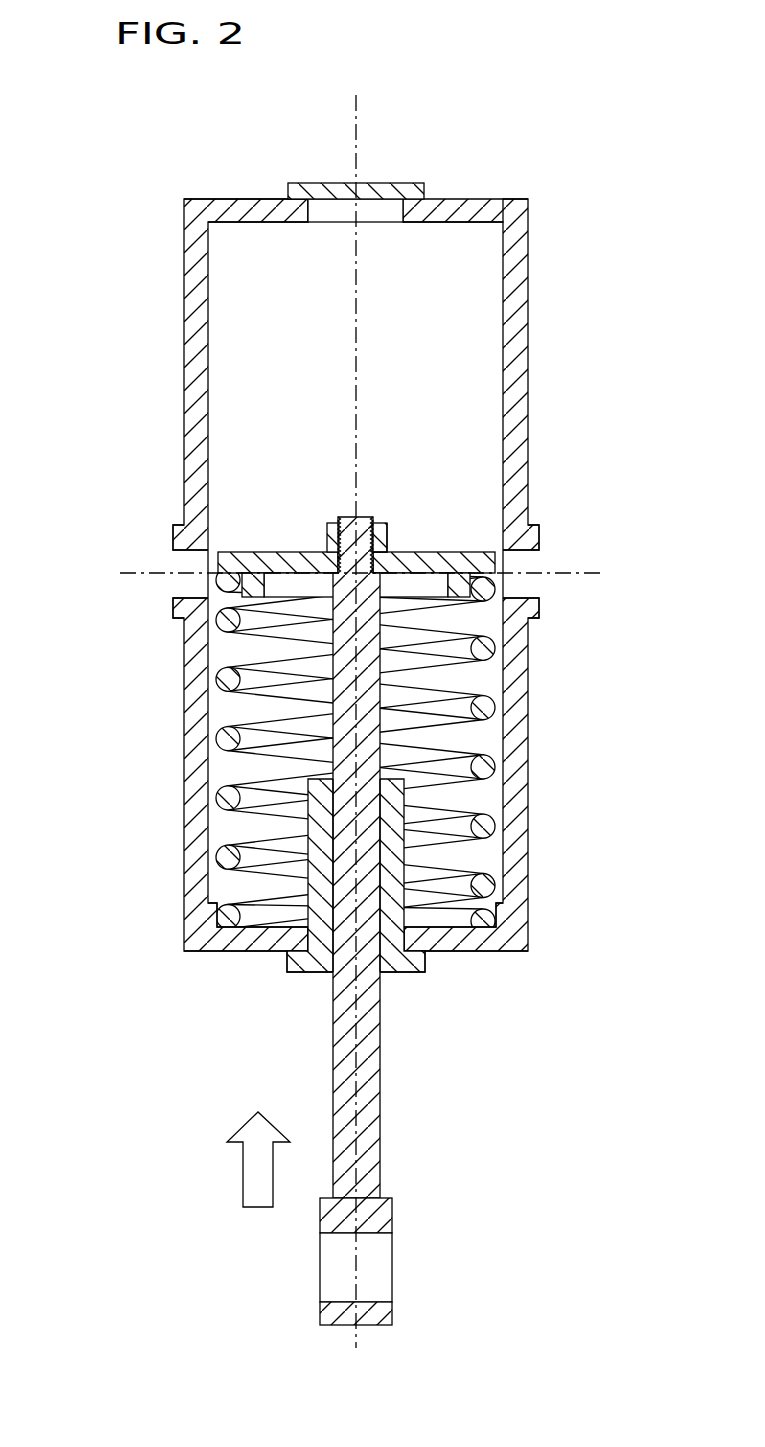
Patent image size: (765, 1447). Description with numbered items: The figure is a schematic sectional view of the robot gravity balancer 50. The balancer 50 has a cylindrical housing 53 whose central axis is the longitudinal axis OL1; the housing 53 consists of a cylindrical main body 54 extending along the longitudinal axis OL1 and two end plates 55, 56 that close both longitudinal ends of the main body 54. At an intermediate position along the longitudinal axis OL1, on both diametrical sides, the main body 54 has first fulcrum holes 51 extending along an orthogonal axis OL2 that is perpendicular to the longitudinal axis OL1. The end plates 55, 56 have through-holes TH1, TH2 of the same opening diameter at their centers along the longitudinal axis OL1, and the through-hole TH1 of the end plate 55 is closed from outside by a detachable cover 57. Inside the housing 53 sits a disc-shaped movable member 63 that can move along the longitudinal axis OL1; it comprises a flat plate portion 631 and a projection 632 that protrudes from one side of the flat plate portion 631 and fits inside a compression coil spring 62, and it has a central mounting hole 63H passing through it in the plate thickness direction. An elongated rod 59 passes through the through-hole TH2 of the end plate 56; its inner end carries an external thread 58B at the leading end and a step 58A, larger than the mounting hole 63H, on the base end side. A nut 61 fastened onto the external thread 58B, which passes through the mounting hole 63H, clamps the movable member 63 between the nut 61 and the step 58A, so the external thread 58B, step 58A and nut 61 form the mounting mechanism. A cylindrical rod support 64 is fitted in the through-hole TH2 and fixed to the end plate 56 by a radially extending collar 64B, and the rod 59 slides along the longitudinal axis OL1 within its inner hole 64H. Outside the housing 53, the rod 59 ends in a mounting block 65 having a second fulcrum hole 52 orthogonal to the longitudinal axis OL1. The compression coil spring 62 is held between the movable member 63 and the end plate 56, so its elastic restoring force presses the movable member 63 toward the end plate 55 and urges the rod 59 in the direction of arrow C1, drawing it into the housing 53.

The balancer 50 is at (592, 180).
The first fulcrum holes 51 is at (523, 597).
The second fulcrum hole 52 is at (332, 1302).
The housing 53 is at (568, 277).
The main body 54 is at (528, 366).
The end plate 55 is at (476, 199).
The end plate 56 is at (528, 925).
The cover 57 is at (402, 183).
The step 58A is at (392, 550).
The external thread 58B is at (368, 525).
The rod 59 is at (416, 1116).
The nut 61 is at (326, 540).
The compression coil spring 62 is at (218, 730).
The movable member 63 is at (82, 472).
The flat plate portion 631 is at (242, 550).
The projection 632 is at (240, 592).
The mounting hole 63H is at (343, 517).
The rod support 64 is at (115, 952).
The collar 64B is at (330, 950).
The inner hole 64H is at (333, 947).
The mounting block 65 is at (418, 1212).
The through-hole TH1 is at (325, 199).
The through-hole TH2 is at (404, 938).
The longitudinal axis OL1 is at (353, 702).
The orthogonal axis OL2 is at (387, 574).
The arrow C1 is at (243, 1175).